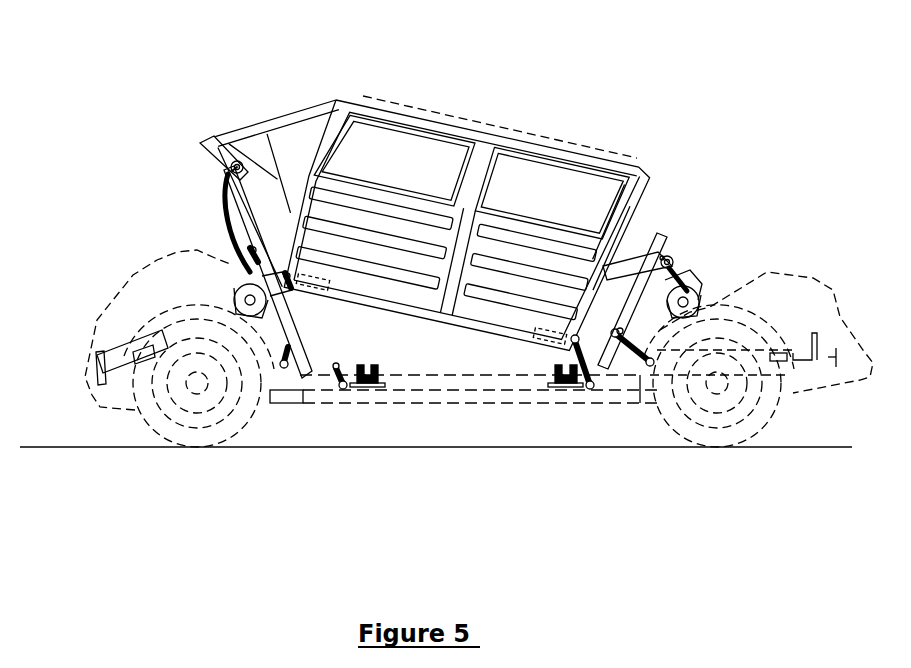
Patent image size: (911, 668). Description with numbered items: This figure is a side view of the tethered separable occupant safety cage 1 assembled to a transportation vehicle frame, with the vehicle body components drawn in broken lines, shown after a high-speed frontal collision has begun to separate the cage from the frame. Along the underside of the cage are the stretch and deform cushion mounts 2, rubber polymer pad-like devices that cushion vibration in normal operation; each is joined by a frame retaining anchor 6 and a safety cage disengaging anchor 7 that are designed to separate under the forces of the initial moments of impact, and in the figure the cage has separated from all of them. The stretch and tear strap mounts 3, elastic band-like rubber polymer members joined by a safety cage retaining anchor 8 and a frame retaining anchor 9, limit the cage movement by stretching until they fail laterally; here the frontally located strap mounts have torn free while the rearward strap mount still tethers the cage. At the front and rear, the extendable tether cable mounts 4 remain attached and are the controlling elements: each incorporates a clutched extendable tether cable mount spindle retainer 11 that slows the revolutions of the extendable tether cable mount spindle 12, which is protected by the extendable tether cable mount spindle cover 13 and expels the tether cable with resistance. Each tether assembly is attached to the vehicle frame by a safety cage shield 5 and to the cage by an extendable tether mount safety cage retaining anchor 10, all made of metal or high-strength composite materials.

The tethered separable occupant safety cage 1 is at (477, 128).
The stretch and deform cushion mount 2 is at (552, 387).
The stretch and tear strap mount 3 is at (247, 258).
The extendable tether cable mount 4 is at (228, 192).
The safety cage shield 5 is at (253, 378).
The stretch and deform cushion mount frame retaining anchor 6 is at (362, 386).
The stretch and deform cushion mount safety cage disengaging anchor 7 is at (308, 278).
The stretch and tear strap mount safety cage retaining anchor 8 is at (286, 274).
The stretch and tear strap mount frame retaining anchor 9 is at (286, 366).
The extendable tether mount safety cage retaining anchor 10 is at (200, 142).
The extendable tether cable mount spindle retainer 11 is at (287, 277).
The extendable tether cable mount spindle 12 is at (233, 297).
The extendable tether cable mount spindle cover 13 is at (237, 313).